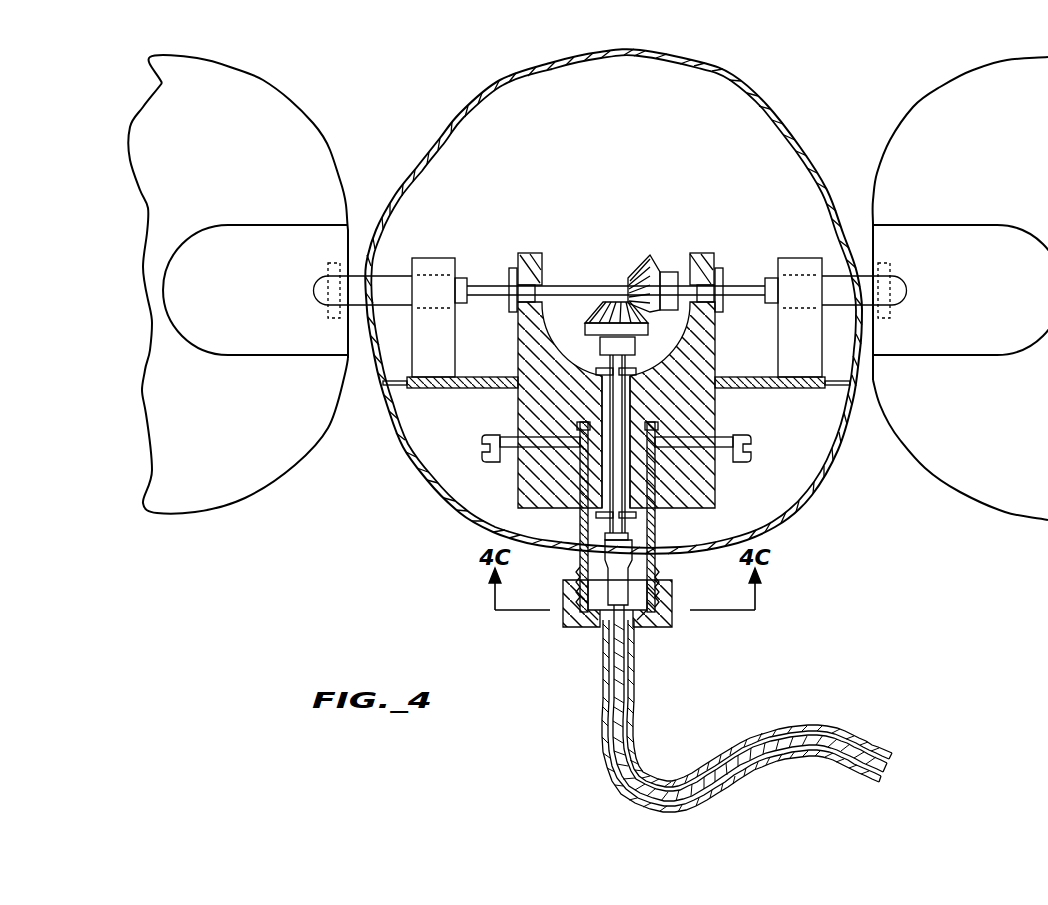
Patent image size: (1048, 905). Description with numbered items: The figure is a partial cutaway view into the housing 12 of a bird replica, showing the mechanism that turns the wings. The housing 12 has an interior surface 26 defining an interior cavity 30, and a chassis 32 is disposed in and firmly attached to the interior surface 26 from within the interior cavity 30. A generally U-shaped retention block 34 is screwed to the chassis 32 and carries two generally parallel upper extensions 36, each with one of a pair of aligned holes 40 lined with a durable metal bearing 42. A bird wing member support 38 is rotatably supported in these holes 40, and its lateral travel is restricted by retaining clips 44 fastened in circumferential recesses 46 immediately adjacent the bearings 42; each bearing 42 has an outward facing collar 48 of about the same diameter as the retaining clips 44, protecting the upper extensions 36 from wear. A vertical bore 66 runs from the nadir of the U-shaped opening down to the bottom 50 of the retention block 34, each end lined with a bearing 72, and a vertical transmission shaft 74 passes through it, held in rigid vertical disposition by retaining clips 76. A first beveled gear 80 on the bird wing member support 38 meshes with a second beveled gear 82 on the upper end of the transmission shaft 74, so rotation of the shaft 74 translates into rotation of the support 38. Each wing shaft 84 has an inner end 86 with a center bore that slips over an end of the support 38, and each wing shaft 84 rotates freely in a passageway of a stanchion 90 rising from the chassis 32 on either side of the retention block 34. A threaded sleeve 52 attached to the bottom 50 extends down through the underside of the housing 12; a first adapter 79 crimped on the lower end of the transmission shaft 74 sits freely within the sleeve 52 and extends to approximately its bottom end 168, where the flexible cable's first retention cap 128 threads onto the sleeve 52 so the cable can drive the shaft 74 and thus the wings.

The housing 12 is at (503, 76).
The interior surface 26 is at (758, 108).
The interior cavity 30 is at (478, 108).
The chassis 32 is at (470, 390).
The retention block 34 is at (730, 398).
The upper extensions 36 is at (536, 253).
The bird wing member support 38 is at (606, 286).
The holes 40 is at (520, 345).
The bearings 42 is at (530, 253).
The retaining clips 44 is at (513, 268).
The circumferential recesses 46 is at (506, 300).
The collars 48 is at (522, 285).
The bottom 50 is at (497, 531).
The threaded sleeve 52 is at (660, 514).
The vertical bore 66 is at (690, 480).
The bearings 72 is at (607, 367).
The vertical transmission shaft 74 is at (690, 415).
The retaining clips 76 is at (628, 367).
The first adapter 79 is at (617, 585).
The first beveled gear 80 is at (650, 258).
The second beveled gear 82 is at (618, 300).
The wing shaft 84 is at (385, 288).
The inner end 86 is at (460, 288).
The stanchions 90 is at (424, 349).
The first retention cap 128 is at (646, 622).
The bottom end 168 is at (583, 622).